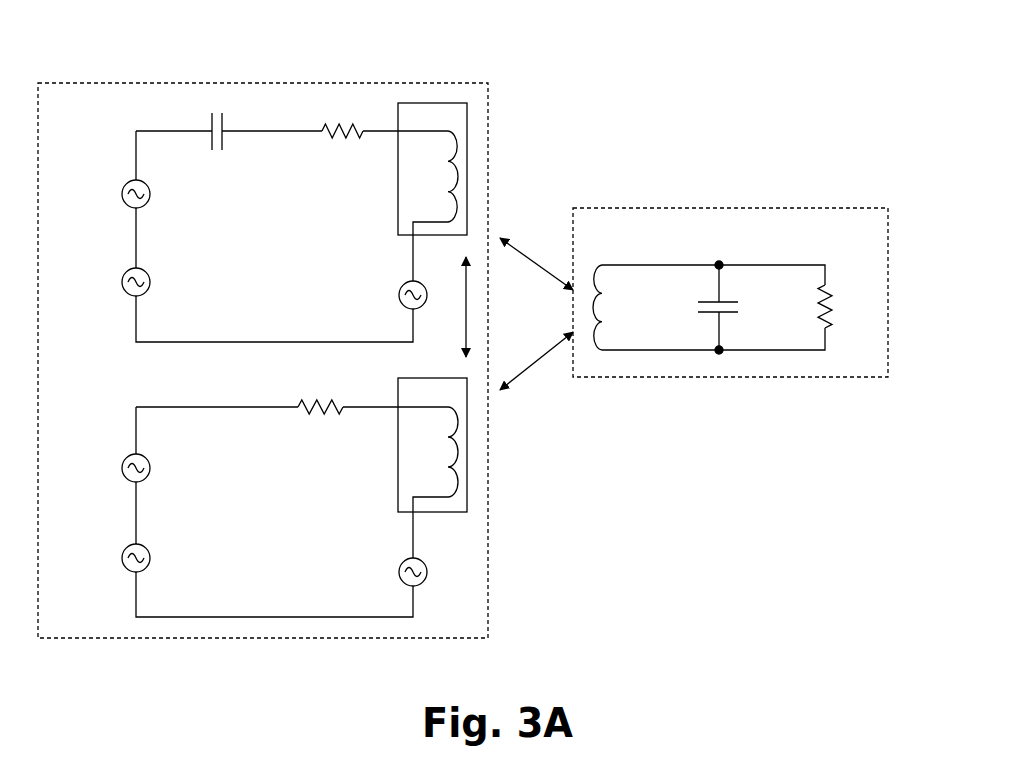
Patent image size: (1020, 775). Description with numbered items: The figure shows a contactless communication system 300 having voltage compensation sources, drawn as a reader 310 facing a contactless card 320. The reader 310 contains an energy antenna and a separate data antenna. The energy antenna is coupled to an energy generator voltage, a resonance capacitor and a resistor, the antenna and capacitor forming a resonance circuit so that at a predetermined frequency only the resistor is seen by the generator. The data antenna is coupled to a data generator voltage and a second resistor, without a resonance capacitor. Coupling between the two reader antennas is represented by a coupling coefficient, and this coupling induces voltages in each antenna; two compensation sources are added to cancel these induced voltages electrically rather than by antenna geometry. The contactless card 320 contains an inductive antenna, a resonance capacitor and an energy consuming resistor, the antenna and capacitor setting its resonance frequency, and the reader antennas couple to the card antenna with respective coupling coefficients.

The contactless communication system 300 is at (740, 132).
The reader 310 is at (400, 83).
The contactless card 320 is at (782, 208).